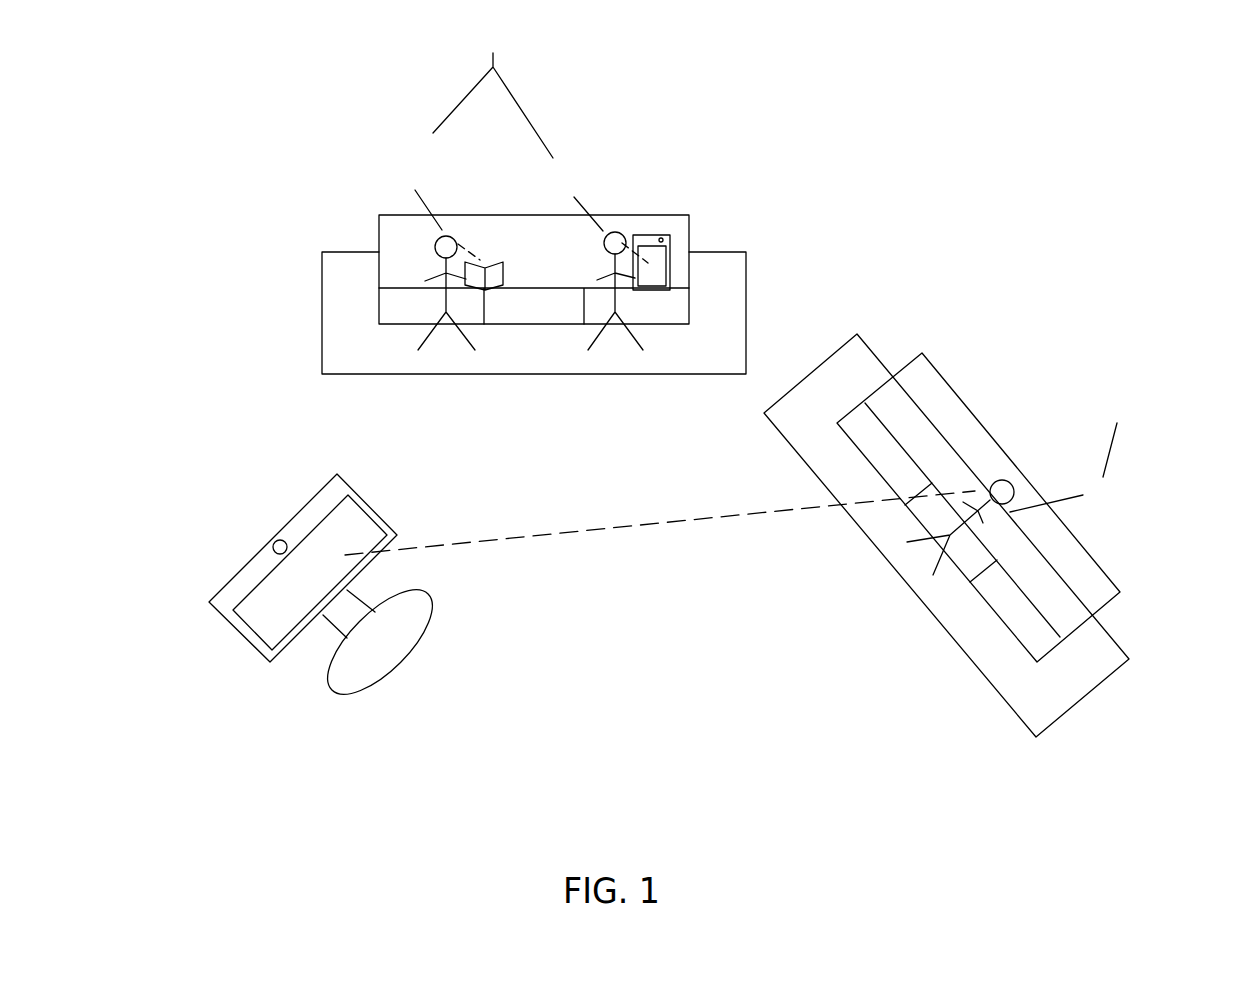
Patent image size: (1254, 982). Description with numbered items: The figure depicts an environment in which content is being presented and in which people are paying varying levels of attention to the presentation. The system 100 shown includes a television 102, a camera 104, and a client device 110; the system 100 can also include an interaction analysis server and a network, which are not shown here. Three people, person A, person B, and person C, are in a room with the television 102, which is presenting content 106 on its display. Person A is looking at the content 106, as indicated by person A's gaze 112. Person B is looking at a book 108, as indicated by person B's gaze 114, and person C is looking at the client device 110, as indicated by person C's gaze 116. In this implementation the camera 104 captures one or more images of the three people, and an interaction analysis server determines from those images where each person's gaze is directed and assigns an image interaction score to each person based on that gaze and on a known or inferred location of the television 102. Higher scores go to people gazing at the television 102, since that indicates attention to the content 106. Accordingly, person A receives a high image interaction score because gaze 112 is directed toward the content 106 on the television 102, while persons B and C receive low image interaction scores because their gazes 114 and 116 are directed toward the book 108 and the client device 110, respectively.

The system 100 is at (169, 95).
The television 102 is at (228, 596).
The camera 104 is at (277, 538).
The content 106 is at (350, 522).
The book 108 is at (508, 262).
The client device 110 is at (668, 233).
The gaze 112 is at (657, 540).
The gaze 114 is at (468, 245).
The gaze 116 is at (630, 247).